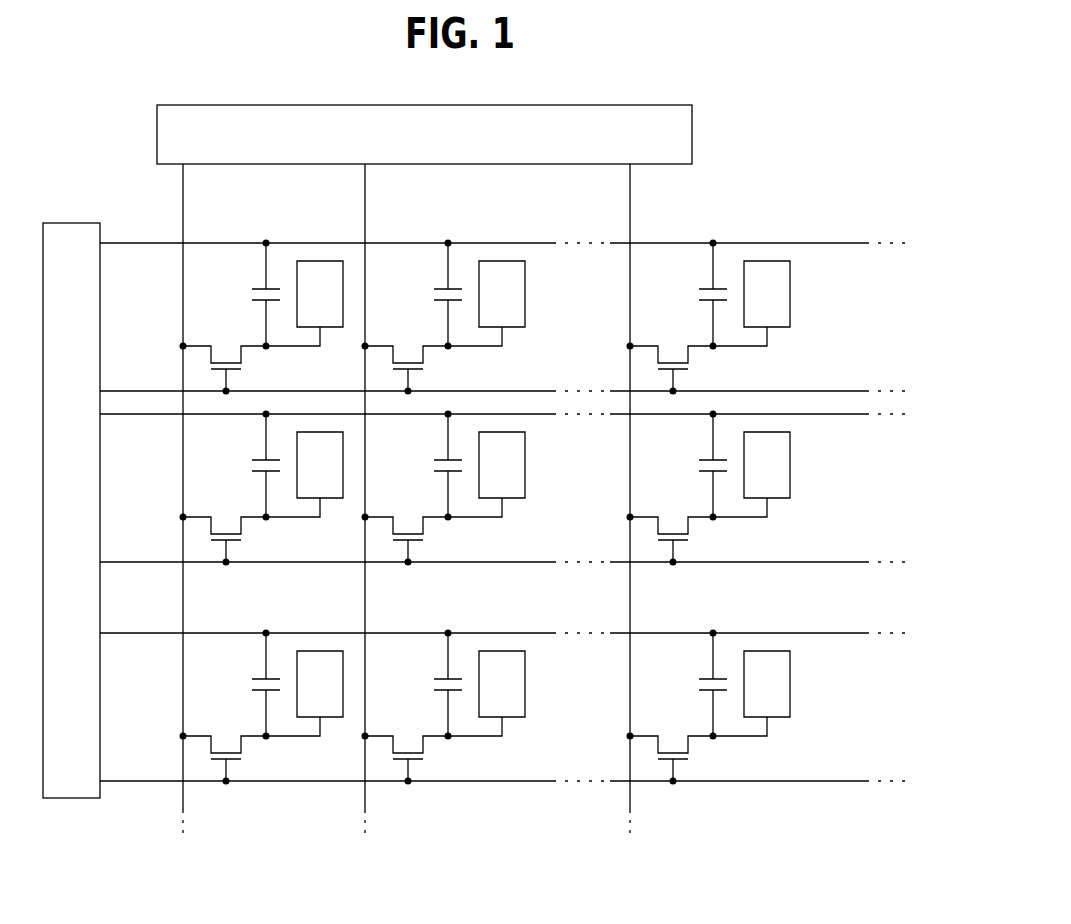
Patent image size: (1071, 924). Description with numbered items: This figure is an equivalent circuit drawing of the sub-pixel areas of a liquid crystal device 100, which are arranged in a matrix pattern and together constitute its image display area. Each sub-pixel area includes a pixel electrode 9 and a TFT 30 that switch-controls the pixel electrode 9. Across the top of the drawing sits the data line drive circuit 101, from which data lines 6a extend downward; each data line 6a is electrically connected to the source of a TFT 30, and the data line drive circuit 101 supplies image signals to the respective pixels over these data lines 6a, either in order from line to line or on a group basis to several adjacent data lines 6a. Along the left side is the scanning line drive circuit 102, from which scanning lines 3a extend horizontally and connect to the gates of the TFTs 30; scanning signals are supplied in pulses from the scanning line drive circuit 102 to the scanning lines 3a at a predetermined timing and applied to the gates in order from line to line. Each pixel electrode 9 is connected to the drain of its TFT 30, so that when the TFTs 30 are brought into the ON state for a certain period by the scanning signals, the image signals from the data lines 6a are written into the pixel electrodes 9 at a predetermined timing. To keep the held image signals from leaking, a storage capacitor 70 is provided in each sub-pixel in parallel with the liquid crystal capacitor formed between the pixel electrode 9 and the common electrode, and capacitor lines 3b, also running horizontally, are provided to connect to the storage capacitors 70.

The liquid crystal device 100 is at (798, 142).
The data line drive circuit 101 is at (157, 133).
The scanning line drive circuit 102 is at (70, 223).
The scanning line 3a is at (172, 391).
The capacitor line 3b is at (144, 243).
The data line 6a is at (184, 232).
The pixel electrode 9 is at (334, 318).
The TFT 30 is at (254, 372).
The storage capacitor 70 is at (240, 294).